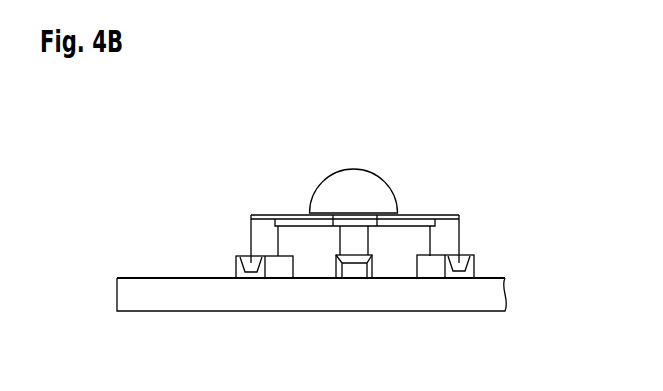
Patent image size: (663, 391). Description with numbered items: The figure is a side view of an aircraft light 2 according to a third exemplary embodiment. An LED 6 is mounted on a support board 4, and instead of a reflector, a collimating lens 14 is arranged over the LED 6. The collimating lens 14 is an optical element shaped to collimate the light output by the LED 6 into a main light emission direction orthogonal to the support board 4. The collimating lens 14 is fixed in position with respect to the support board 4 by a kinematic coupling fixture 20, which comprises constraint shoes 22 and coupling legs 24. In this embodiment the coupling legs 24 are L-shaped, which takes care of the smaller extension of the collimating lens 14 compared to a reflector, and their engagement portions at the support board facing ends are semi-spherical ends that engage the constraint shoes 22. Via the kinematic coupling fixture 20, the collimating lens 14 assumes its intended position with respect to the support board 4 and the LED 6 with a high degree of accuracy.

The aircraft light 2 is at (174, 116).
The support board 4 is at (470, 297).
The LED 6 is at (356, 270).
The collimating lens 14 is at (349, 168).
The kinematic coupling fixture 20 is at (492, 228).
The constraint shoes 22 is at (283, 268).
The coupling legs 24 is at (263, 222).